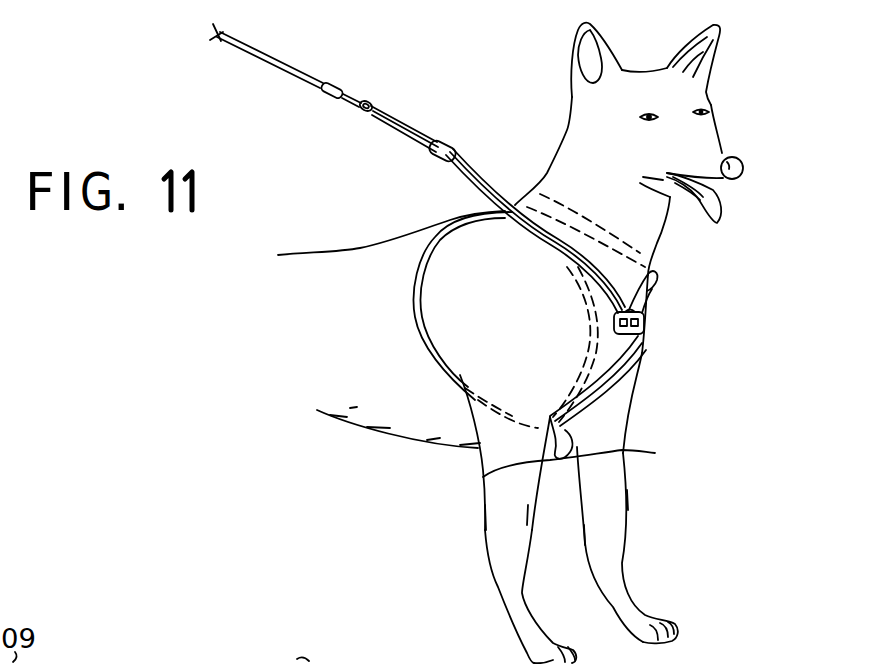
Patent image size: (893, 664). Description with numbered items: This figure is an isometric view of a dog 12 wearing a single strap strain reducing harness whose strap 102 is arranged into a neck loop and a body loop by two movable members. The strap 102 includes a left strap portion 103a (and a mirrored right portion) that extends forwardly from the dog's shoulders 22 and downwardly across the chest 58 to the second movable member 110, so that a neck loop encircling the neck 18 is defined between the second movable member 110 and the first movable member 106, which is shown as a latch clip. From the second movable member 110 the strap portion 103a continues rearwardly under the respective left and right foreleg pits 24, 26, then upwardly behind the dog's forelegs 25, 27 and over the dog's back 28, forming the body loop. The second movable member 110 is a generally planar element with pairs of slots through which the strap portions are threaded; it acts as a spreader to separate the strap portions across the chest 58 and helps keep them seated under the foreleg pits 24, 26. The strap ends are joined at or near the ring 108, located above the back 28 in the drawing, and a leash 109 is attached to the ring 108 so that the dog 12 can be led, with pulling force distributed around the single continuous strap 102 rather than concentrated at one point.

The dog 12 is at (357, 407).
The neck 18 is at (657, 220).
The shoulders 22 is at (460, 223).
The left foreleg pit 24 is at (625, 450).
The foreleg 25 is at (613, 542).
The right foreleg pit 26 is at (485, 476).
The foreleg 27 is at (503, 570).
The back 28 is at (303, 252).
The chest 58 is at (653, 287).
The strap 102 is at (633, 365).
The left strap portion 103a is at (526, 198).
The first movable member 106 is at (446, 141).
The ring 108 is at (362, 109).
The leash 109 is at (283, 62).
The second movable member 110 is at (650, 330).